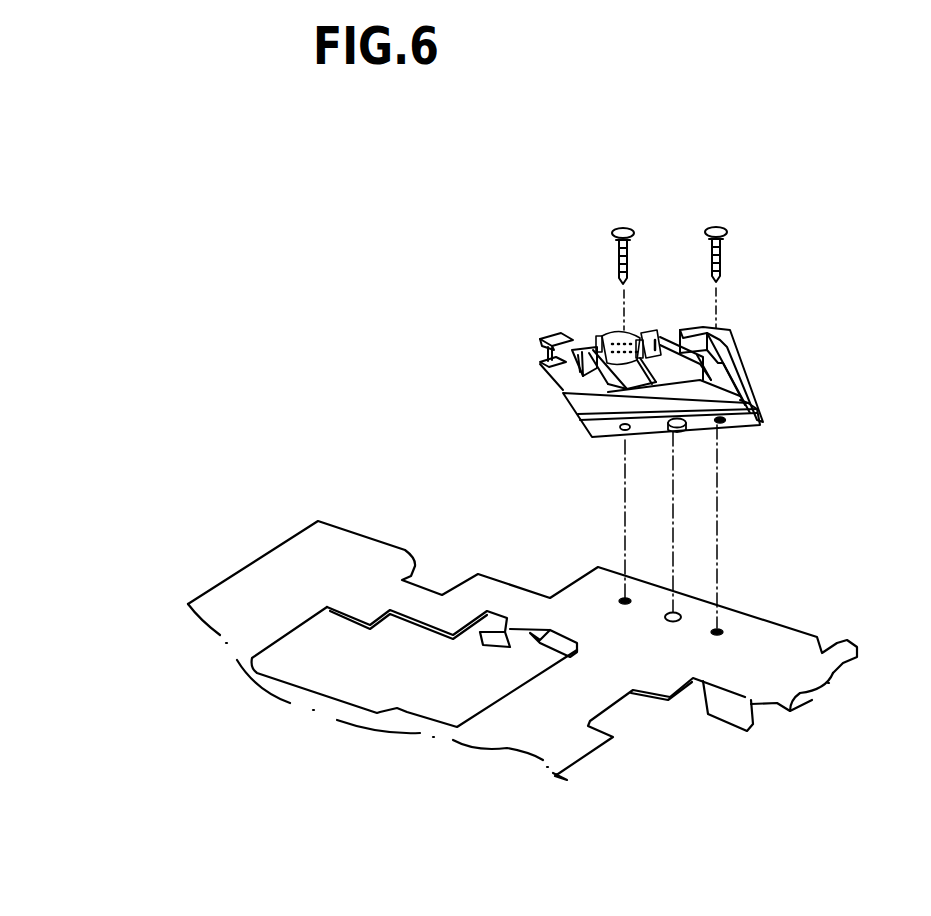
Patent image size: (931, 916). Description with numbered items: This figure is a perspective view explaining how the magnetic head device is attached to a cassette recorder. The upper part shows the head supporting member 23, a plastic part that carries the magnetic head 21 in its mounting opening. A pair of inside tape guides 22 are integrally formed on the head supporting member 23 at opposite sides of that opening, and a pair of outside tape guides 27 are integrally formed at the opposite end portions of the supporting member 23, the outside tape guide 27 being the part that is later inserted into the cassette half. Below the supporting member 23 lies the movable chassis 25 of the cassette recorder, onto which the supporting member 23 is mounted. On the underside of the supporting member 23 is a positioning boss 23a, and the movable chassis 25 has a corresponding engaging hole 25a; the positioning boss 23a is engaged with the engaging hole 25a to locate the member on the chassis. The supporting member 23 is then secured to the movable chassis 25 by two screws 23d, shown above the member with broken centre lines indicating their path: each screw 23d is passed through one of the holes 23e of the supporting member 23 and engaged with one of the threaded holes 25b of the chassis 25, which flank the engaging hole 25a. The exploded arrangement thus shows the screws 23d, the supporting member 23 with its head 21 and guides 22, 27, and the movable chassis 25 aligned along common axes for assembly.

The magnetic head 21 is at (634, 335).
The inside tape guides 22 is at (601, 333).
The head supporting member 23 is at (530, 330).
The positioning boss 23a is at (683, 432).
The screws 23d is at (615, 257).
The holes 23e is at (618, 433).
The movable chassis 25 is at (258, 568).
The engaging hole 25a is at (680, 610).
The threaded holes 25b is at (622, 598).
The outside tape guides 27 is at (706, 326).